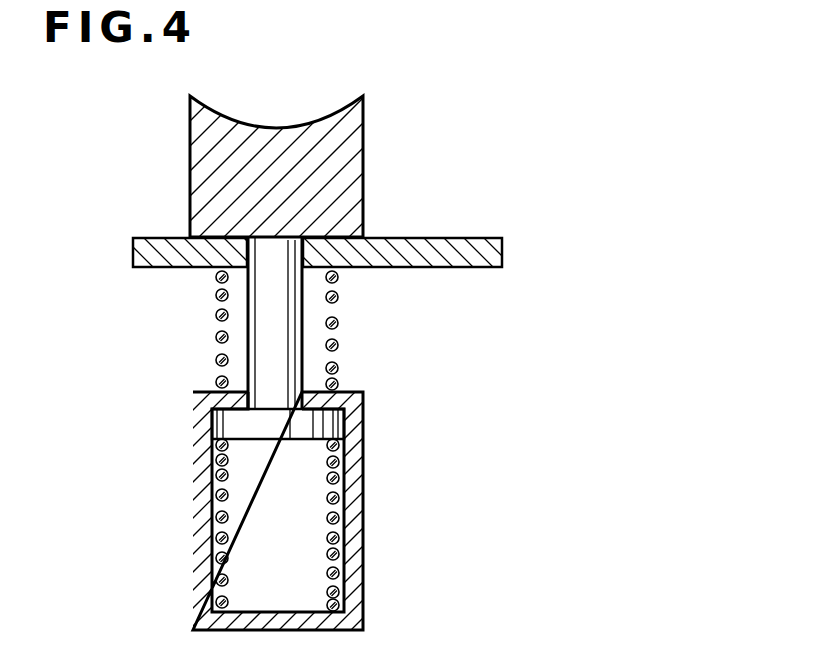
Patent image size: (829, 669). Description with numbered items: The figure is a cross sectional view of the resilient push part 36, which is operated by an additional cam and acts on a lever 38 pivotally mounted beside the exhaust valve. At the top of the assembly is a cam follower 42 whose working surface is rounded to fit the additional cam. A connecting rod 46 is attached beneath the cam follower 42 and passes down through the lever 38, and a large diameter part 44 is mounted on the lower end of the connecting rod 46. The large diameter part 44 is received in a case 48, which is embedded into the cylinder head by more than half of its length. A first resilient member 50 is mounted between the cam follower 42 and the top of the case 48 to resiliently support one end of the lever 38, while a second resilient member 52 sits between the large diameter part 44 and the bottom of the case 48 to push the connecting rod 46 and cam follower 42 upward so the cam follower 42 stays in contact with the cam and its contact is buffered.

The resilient push part 36 is at (182, 354).
The lever 38 is at (462, 240).
The cam follower 42 is at (327, 161).
The large diameter part 44 is at (313, 425).
The connecting rod 46 is at (285, 352).
The case 48 is at (367, 547).
The first resilient member 50 is at (340, 298).
The second resilient member 52 is at (340, 475).